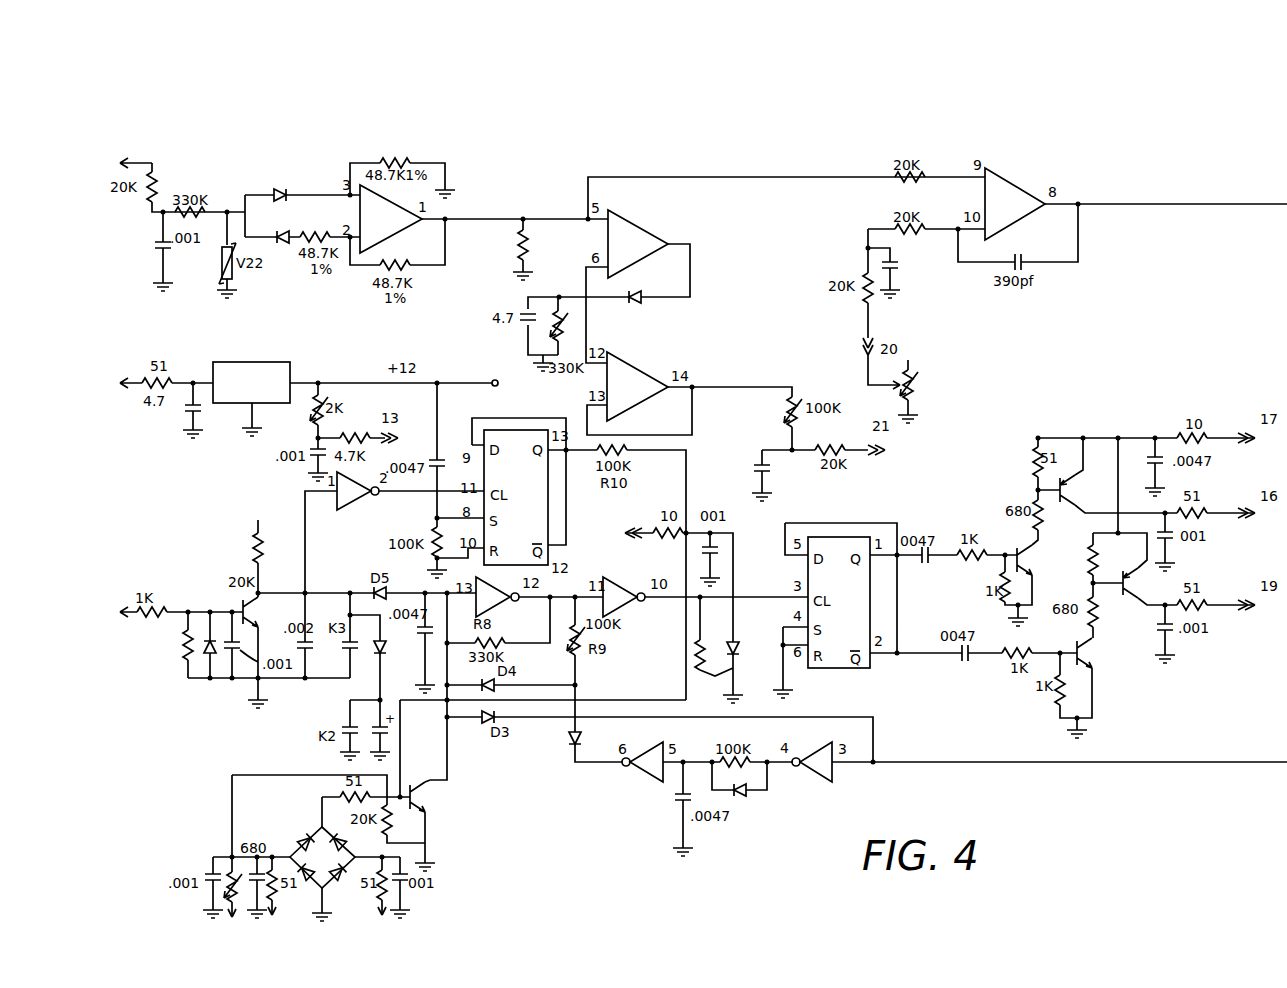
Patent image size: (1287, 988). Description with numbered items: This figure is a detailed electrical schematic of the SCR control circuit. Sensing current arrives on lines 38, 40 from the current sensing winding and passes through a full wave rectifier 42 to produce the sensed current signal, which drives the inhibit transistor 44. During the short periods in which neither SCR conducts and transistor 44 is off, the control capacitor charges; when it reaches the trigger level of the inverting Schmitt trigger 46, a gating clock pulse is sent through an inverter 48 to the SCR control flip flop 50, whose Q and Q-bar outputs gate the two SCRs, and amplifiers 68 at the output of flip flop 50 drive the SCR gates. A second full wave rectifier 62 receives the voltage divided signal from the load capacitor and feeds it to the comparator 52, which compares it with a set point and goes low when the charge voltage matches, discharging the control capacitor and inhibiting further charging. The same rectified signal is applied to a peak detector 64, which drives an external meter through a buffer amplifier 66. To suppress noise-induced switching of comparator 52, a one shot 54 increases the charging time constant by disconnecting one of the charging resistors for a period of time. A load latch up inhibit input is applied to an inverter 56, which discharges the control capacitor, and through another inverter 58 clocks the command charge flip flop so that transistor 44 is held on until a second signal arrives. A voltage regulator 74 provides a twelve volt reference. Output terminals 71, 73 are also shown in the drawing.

The full wave rectifier 62 is at (439, 284).
The peak detector 64 is at (640, 228).
The buffer amplifier 66 is at (645, 367).
The comparator 52 is at (976, 304).
The voltage regulator 74 is at (262, 363).
The inverter 58 is at (358, 501).
The inverter 56 is at (204, 695).
The inverting Schmitt trigger 46 is at (497, 604).
The inverter 48 is at (618, 586).
The SCR control flip flop 50 is at (845, 537).
The amplifiers 68 is at (1143, 679).
The output line 73 is at (1225, 514).
The output line 71 is at (1224, 608).
The full wave rectifier 42 is at (298, 824).
The inhibit transistor 44 is at (420, 800).
The line 38 is at (272, 914).
The line 40 is at (382, 914).
The one shot 54 is at (654, 814).